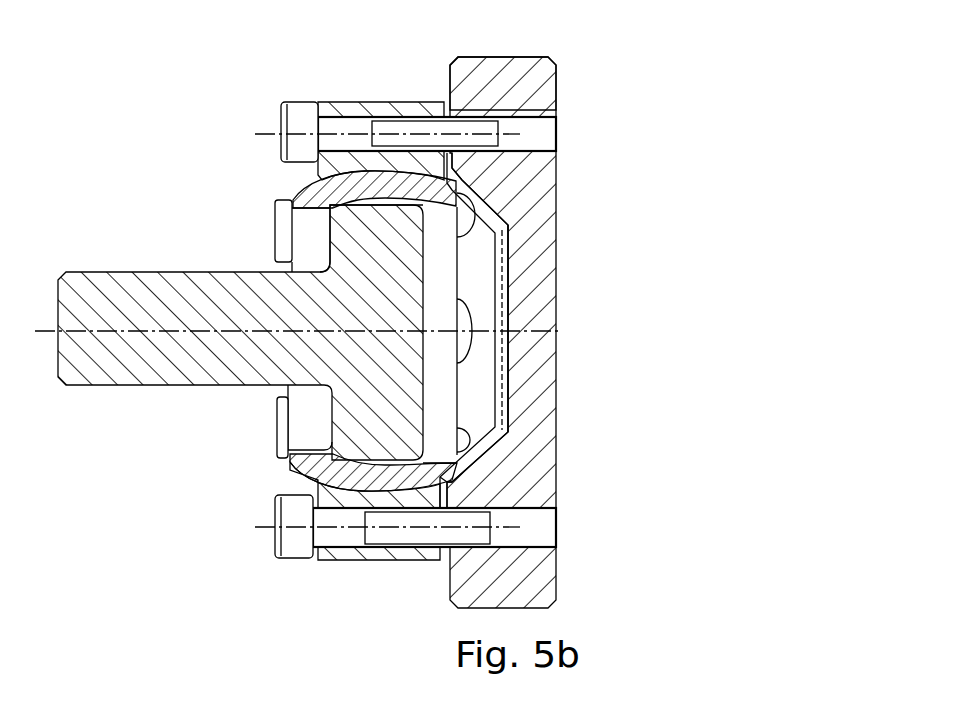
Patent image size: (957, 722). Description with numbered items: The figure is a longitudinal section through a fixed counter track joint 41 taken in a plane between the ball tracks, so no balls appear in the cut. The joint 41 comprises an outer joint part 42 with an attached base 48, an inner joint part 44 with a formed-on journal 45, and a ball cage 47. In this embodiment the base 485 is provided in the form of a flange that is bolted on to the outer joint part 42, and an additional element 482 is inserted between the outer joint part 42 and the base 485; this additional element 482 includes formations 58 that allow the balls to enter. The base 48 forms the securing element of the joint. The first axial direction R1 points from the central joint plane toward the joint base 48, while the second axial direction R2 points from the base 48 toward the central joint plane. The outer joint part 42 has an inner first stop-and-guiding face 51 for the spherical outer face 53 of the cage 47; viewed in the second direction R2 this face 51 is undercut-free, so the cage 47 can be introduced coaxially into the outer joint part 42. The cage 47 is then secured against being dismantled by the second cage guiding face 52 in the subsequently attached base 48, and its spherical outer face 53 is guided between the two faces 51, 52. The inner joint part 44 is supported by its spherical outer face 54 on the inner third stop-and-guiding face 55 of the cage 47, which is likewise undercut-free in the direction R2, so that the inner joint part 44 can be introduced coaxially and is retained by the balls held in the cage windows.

The joint 41 is at (244, 72).
The outer joint part 42 is at (383, 107).
The inner joint part 44 is at (347, 245).
The journal 45 is at (135, 283).
The ball cage 47 is at (290, 457).
The base 48 is at (501, 332).
The base 485 is at (553, 86).
The additional element 482 is at (500, 215).
The first stop-and-guiding face 51 is at (320, 187).
The second cage guiding face 52 is at (493, 186).
The spherical outer face 53 is at (370, 152).
The spherical outer face 54 is at (373, 465).
The third stop-and-guiding face 55 is at (332, 430).
The formations 58 is at (487, 497).
The first axial direction R1 is at (708, 487).
The second axial direction R2 is at (656, 180).